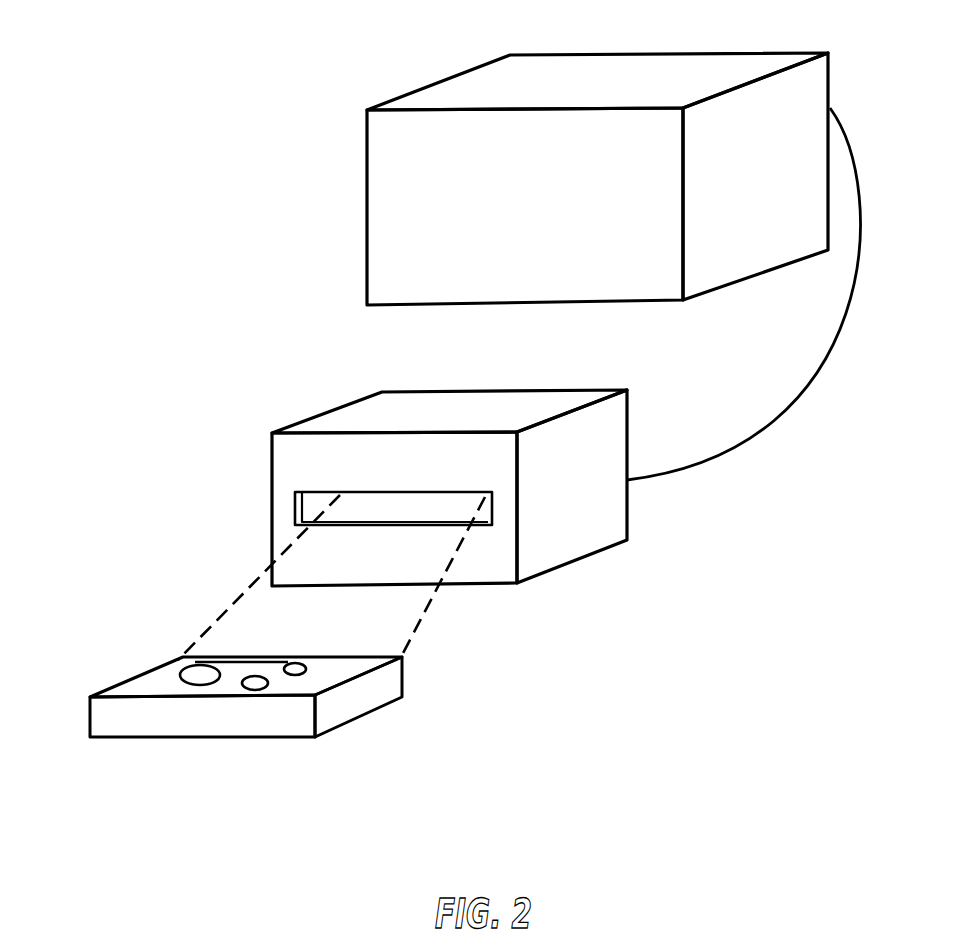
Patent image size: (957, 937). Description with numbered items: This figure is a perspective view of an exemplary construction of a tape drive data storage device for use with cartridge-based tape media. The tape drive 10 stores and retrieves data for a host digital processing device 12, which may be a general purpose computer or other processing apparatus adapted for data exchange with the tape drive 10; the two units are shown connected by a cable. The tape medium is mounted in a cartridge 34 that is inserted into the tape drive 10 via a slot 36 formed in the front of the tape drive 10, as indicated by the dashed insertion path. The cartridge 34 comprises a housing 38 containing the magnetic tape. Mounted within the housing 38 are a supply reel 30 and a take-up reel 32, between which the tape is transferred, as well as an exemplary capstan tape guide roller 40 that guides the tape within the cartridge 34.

The tape drive 10 is at (475, 484).
The host digital processing device 12 is at (565, 55).
The supply reel 30 is at (198, 668).
The take-up reel 32 is at (253, 693).
The cartridge 34 is at (410, 739).
The slot 36 is at (425, 491).
The housing 38 is at (218, 693).
The capstan tape guide roller 40 is at (297, 665).